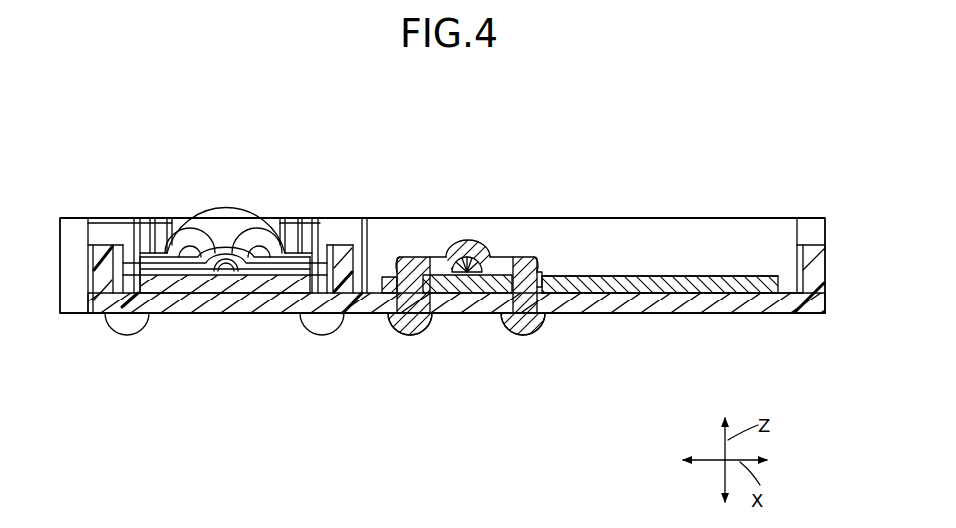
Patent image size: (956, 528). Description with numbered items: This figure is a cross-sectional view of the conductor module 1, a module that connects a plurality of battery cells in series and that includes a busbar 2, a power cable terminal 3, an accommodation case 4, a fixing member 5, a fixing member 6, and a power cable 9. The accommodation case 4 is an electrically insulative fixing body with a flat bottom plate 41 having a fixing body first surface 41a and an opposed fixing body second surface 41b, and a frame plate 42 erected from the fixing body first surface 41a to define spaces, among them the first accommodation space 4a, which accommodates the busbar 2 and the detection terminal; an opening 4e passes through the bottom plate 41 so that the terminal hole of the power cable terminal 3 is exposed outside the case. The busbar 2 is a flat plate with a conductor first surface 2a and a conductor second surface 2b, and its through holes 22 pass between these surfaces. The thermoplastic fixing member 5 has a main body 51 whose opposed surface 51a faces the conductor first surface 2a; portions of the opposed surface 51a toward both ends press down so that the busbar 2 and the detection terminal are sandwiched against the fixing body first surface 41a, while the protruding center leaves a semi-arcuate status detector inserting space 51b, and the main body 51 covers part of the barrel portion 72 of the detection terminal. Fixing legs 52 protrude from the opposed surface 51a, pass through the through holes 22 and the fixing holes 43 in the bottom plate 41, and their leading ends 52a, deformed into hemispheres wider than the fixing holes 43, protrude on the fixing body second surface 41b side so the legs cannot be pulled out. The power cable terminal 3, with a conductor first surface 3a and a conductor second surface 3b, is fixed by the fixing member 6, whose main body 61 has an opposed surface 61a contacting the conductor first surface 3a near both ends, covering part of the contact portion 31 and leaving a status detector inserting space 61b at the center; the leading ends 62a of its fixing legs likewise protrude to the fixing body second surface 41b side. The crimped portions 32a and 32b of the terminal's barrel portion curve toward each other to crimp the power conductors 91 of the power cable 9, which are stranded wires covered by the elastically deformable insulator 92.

The conductor module 1 is at (103, 147).
The busbar 2 is at (660, 277).
The conductor first surface 2a is at (700, 276).
The conductor second surface 2b is at (742, 296).
The power cable terminal 3 is at (224, 232).
The conductor first surface 3a is at (150, 260).
The conductor second surface 3b is at (255, 302).
The contact portion 31 is at (200, 287).
The crimped portion 32a is at (193, 230).
The crimped portion 32b is at (255, 230).
The accommodation case 4 is at (828, 226).
The first accommodation space 4a is at (612, 236).
The opening 4e is at (175, 318).
The bottom plate 41 is at (788, 314).
The fixing body first surface 41a is at (648, 300).
The fixing body second surface 41b is at (660, 314).
The frame plate 42 is at (805, 240).
The fixing holes 43 is at (405, 334).
The fixing member 5 is at (475, 286).
The main body 51 is at (418, 275).
The opposed surface 51a is at (490, 302).
The status detector inserting space 51b is at (460, 302).
The fixing legs 52 is at (528, 272).
The leading ends 52a is at (410, 332).
The fixing member 6 is at (308, 250).
The main body 61 is at (128, 264).
The opposed surface 61a is at (270, 302).
The status detector inserting space 61b is at (228, 302).
The leading ends 62a is at (118, 334).
The barrel portion 72 is at (485, 268).
The power cable 9 is at (226, 178).
The power conductors 91 is at (190, 250).
The insulator 92 is at (232, 262).
The through holes 22 is at (400, 266).